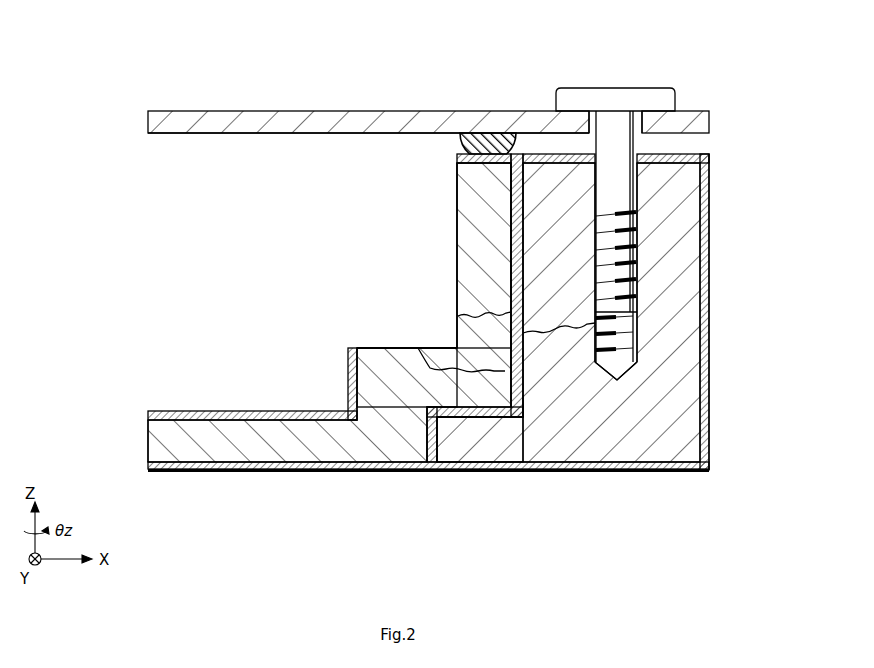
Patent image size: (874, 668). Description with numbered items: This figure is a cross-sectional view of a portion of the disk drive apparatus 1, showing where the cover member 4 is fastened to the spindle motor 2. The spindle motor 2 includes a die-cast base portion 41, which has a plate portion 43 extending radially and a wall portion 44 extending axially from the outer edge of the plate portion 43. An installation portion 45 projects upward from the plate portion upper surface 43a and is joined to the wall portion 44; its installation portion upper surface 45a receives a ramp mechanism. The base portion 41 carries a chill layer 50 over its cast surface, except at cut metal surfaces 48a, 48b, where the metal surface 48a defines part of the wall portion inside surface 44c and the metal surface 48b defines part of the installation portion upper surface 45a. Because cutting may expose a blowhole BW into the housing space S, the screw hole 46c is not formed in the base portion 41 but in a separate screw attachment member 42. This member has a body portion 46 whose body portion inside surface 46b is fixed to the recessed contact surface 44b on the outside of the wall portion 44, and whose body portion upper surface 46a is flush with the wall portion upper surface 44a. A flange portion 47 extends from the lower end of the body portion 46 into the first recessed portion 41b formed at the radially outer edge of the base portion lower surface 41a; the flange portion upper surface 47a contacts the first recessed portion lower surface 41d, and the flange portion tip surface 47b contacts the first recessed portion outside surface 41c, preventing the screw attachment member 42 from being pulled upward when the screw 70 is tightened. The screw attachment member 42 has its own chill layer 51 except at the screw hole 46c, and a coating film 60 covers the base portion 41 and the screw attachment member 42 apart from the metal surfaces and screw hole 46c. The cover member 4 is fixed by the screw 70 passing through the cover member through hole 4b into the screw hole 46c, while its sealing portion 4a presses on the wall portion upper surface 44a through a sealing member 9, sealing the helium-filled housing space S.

The disk drive apparatus 1 is at (802, 64).
The spindle motor 2 is at (471, 312).
The cover member 4 is at (263, 122).
The sealing portion 4a is at (455, 137).
The cover member through hole 4b is at (600, 130).
The sealing member 9 is at (484, 143).
The base portion 41 is at (365, 478).
The base portion lower surface 41a is at (265, 466).
The first recessed portion 41b is at (425, 527).
The first recessed portion outside surface 41c is at (441, 447).
The first recessed portion lower surface 41d is at (468, 418).
The screw attachment member 42 is at (518, 482).
The plate portion 43 is at (208, 450).
The plate portion upper surface 43a is at (193, 412).
The wall portion 44 is at (474, 198).
The wall portion upper surface 44a is at (506, 150).
The contact surface 44b is at (514, 277).
The wall portion inside surface 44c is at (415, 285).
The installation portion 45 is at (380, 378).
The installation portion upper surface 45a is at (372, 311).
The body portion 46 is at (683, 388).
The body portion upper surface 46a is at (686, 153).
The body portion inside surface 46b is at (525, 246).
The screw hole 46c is at (640, 350).
The flange portion 47 is at (500, 441).
The flange portion upper surface 47a is at (495, 410).
The flange portion tip surface 47b is at (425, 445).
The metal surface 48a is at (500, 240).
The metal surface 48b is at (375, 347).
The chill layer 50 is at (507, 184).
The chill layer 51 is at (709, 205).
The coating film 60 is at (709, 288).
The screw 70 is at (627, 95).
The blowhole BW is at (412, 350).
The housing space S is at (218, 206).